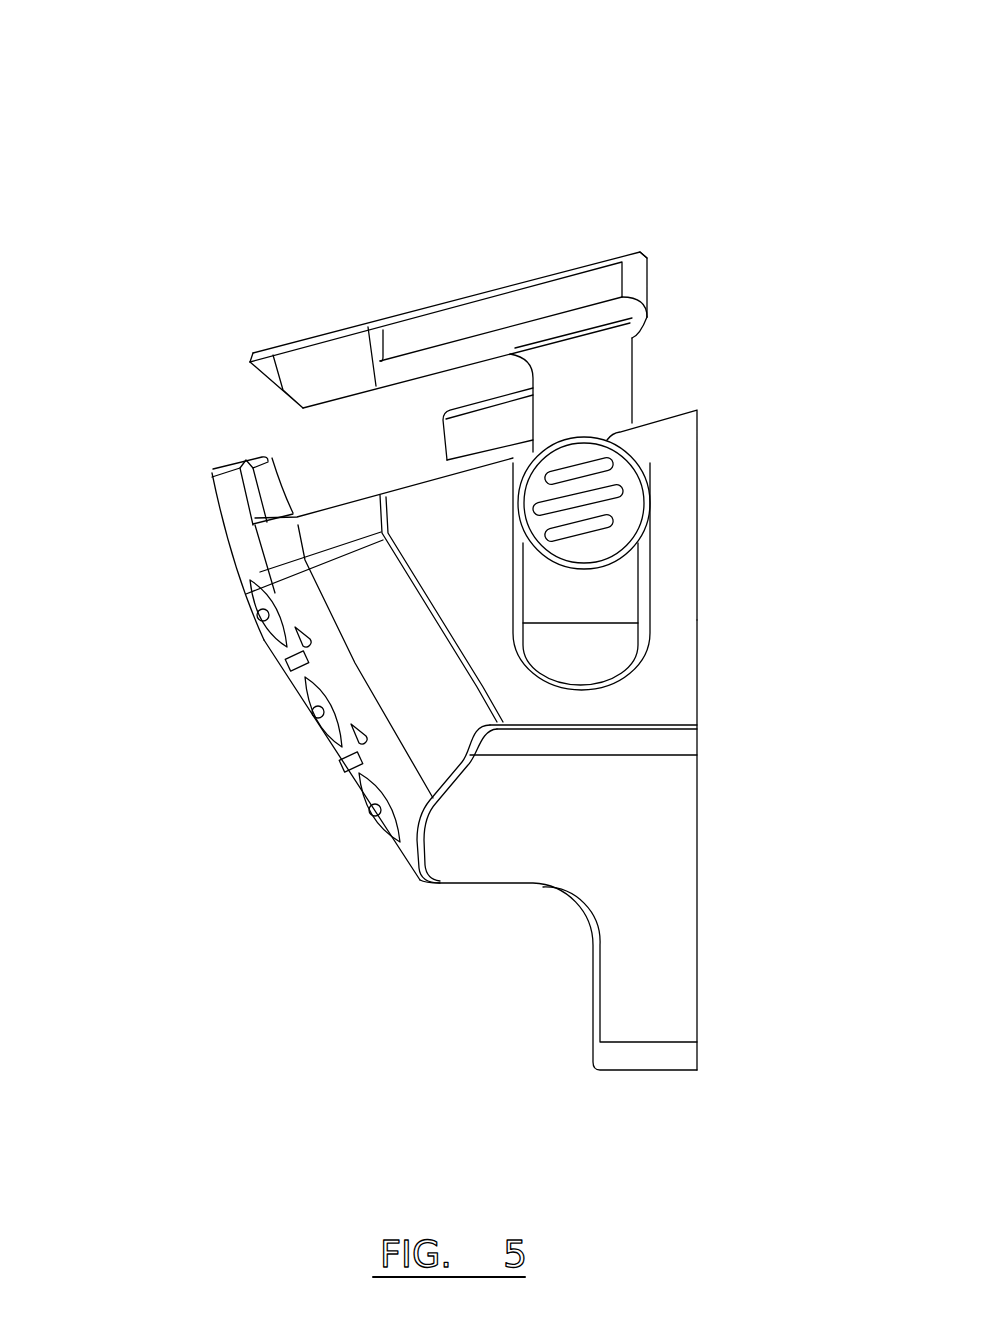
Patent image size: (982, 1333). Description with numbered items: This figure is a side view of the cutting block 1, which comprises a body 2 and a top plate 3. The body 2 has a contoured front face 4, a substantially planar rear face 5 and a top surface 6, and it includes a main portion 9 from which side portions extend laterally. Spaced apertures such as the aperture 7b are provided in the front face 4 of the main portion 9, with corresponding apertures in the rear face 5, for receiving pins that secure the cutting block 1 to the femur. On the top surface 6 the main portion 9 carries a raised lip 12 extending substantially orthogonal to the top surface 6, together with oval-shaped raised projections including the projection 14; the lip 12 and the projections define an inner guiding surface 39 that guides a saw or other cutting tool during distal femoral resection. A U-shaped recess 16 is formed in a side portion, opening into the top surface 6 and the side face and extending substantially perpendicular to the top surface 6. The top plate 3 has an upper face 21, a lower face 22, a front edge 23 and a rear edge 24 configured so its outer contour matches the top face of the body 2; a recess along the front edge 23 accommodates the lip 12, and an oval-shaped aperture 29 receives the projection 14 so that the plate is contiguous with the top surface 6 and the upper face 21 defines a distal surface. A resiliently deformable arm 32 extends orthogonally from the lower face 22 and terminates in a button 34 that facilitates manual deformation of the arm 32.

The cutting block 1 is at (574, 136).
The body 2 is at (480, 887).
The top plate 3 is at (647, 268).
The front face 4 is at (232, 566).
The rear face 5 is at (698, 618).
The top surface 6 is at (670, 415).
The aperture 7b is at (277, 627).
The main portion 9 is at (353, 788).
The raised lip 12 is at (233, 500).
The raised projection 14 is at (483, 427).
The U-shaped recess 16 is at (607, 665).
The upper face 21 is at (338, 333).
The lower face 22 is at (347, 405).
The front edge 23 is at (264, 379).
The rear edge 24 is at (647, 292).
The second oval-shaped aperture 29 is at (557, 318).
The second resiliently deformable arm 32 is at (590, 387).
The button 34 is at (630, 513).
The inner guiding surface 39 is at (312, 438).